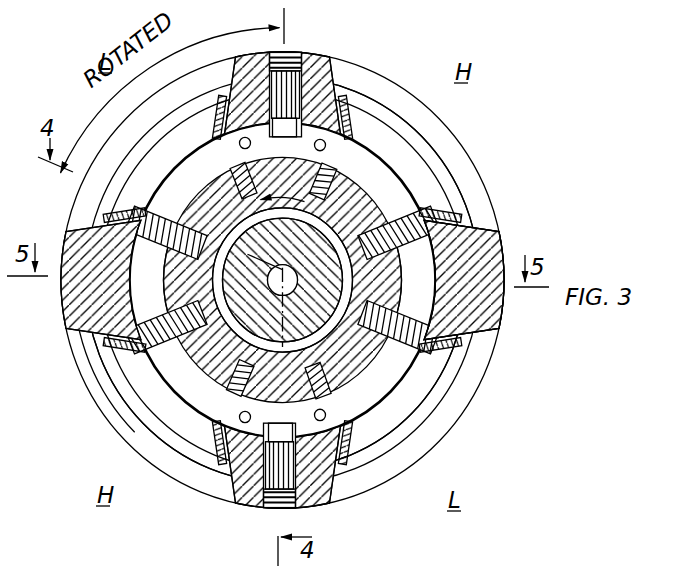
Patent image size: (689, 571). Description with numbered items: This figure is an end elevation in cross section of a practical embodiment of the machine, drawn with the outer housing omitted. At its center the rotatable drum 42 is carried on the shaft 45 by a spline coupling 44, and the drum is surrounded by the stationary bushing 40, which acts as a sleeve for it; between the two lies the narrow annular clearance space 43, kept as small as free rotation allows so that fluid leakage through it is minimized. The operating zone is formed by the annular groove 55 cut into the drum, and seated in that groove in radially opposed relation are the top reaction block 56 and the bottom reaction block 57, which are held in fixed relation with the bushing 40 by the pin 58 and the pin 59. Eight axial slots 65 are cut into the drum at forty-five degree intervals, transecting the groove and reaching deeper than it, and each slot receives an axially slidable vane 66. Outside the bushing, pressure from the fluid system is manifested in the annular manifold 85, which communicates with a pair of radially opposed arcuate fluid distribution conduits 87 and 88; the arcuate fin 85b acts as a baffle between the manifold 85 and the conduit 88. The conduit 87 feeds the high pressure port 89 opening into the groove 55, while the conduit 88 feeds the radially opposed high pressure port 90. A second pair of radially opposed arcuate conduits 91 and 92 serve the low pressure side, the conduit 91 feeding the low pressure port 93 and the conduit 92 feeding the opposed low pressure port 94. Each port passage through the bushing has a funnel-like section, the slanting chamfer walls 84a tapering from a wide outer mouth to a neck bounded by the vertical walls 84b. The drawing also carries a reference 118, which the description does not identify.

The stationary bushing 40 is at (318, 76).
The rotatable drum 42 is at (405, 371).
The clearance space 43 is at (480, 236).
The spline coupling 44 is at (331, 241).
The shaft 45 is at (247, 315).
The annular groove 55 is at (199, 366).
The reaction block 56 is at (346, 125).
The reaction block 57 is at (338, 439).
The pin 58 is at (301, 62).
The pin 59 is at (270, 512).
The axial slot 65 is at (160, 262).
The vane 66 is at (232, 176).
The chamfer wall 84a is at (421, 122).
The vertical wall 84b is at (391, 104).
The manifold 85 is at (432, 131).
The arcuate fin 85b is at (132, 435).
The fluid distribution conduit 87 is at (430, 153).
The fluid distribution conduit 88 is at (162, 443).
The high pressure port 89 is at (397, 130).
The high pressure port 90 is at (160, 384).
The fluid distribution conduit 91 is at (135, 147).
The fluid distribution conduit 92 is at (393, 450).
The low pressure port 93 is at (190, 143).
The low pressure port 94 is at (402, 393).
The intermediate ring 118 is at (115, 380).